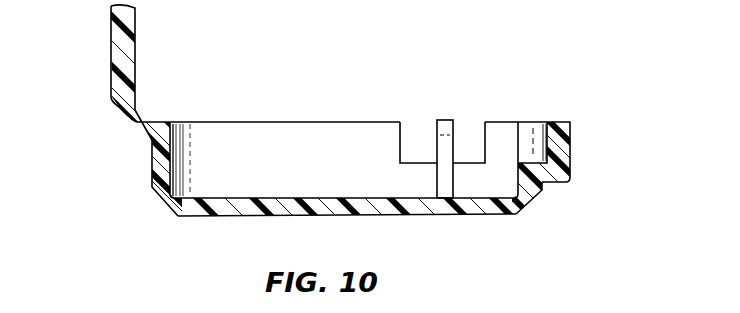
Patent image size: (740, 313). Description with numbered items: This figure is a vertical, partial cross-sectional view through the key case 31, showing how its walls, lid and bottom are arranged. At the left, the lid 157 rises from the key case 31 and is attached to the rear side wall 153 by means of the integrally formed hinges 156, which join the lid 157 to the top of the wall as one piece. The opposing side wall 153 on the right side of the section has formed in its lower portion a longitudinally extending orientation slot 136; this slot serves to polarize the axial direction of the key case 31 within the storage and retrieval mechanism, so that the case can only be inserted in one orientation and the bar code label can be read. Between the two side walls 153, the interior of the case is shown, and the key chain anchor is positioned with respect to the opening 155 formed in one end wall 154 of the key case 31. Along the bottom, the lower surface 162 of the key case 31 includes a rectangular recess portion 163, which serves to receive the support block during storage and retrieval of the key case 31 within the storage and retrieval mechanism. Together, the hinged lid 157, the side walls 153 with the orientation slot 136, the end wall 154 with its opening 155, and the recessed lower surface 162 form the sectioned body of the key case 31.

The lid 157 is at (112, 50).
The integrally formed hinges 156 is at (140, 123).
The side wall 153 is at (150, 176).
The end wall 154 is at (255, 138).
The opening 155 is at (400, 133).
The key case 31 is at (217, 220).
The lower surface 162 is at (258, 217).
The rectangular recess portion 163 is at (397, 217).
The orientation slot 136 is at (541, 188).